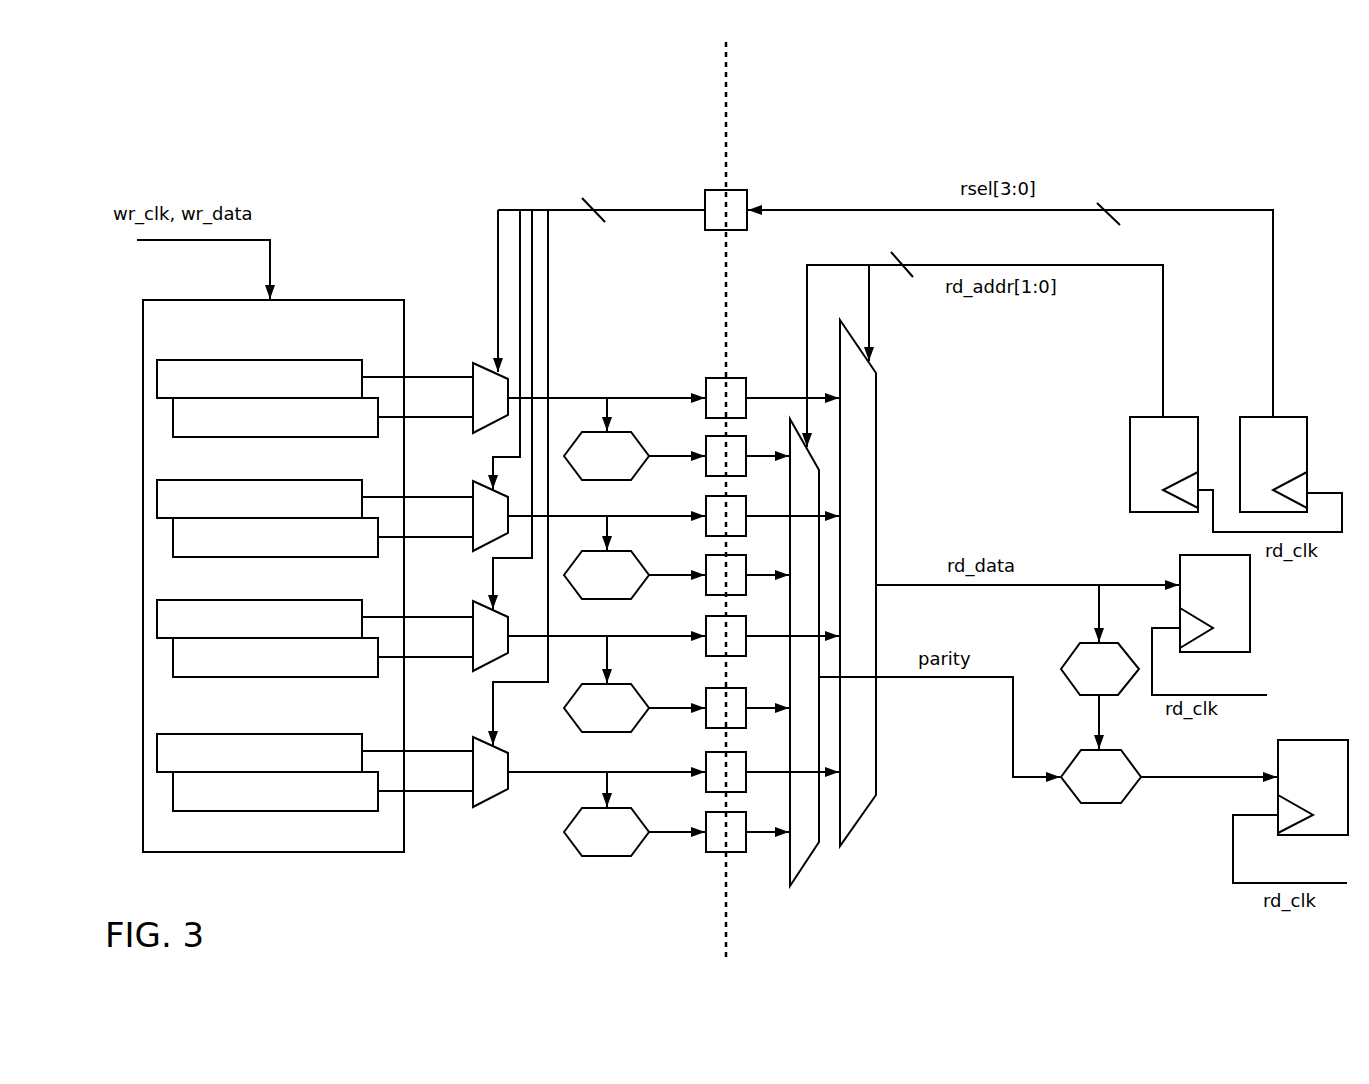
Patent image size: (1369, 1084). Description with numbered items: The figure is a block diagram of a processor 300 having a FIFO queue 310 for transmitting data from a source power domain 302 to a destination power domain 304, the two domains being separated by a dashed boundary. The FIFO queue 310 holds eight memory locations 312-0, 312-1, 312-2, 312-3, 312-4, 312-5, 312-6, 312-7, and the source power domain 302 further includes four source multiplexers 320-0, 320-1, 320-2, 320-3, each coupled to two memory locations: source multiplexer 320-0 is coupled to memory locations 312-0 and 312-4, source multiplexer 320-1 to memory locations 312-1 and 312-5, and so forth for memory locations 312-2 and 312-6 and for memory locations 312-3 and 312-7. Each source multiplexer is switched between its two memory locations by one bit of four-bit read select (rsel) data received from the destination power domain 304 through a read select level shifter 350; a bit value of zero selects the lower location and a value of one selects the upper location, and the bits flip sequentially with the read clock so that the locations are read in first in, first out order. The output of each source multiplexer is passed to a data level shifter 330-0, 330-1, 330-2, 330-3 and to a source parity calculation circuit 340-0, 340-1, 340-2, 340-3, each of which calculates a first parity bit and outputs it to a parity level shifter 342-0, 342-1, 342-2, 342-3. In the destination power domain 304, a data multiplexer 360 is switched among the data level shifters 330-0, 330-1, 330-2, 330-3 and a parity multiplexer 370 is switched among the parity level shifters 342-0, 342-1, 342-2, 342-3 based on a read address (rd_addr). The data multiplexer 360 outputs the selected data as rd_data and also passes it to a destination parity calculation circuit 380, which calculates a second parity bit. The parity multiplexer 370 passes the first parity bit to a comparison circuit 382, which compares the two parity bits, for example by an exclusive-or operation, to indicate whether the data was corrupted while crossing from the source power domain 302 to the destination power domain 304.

The processor 300 is at (116, 92).
The source power domain 302 is at (613, 114).
The destination power domain 304 is at (901, 114).
The FIFO queue 310 is at (193, 331).
The memory location 312-0 is at (157, 381).
The memory location 312-1 is at (157, 501).
The memory location 312-2 is at (157, 618).
The memory location 312-3 is at (157, 755).
The memory location 312-4 is at (173, 416).
The memory location 312-5 is at (173, 537).
The memory location 312-6 is at (173, 657).
The memory location 312-7 is at (173, 791).
The source multiplexer 320-0 is at (473, 366).
The source multiplexer 320-1 is at (473, 484).
The source multiplexer 320-2 is at (473, 604).
The source multiplexer 320-3 is at (473, 740).
The data level shifter 330-0 is at (705, 388).
The data level shifter 330-1 is at (705, 506).
The data level shifter 330-2 is at (705, 626).
The data level shifter 330-3 is at (705, 762).
The source parity calculation circuit 340-0 is at (606, 456).
The source parity calculation circuit 340-1 is at (606, 575).
The source parity calculation circuit 340-2 is at (606, 708).
The source parity calculation circuit 340-3 is at (606, 832).
The parity level shifter 342-0 is at (706, 441).
The parity level shifter 342-1 is at (706, 560).
The parity level shifter 342-2 is at (706, 693).
The parity level shifter 342-3 is at (706, 817).
The read select level shifter 350 is at (705, 195).
The data multiplexer 360 is at (878, 400).
The parity multiplexer 370 is at (822, 858).
The destination parity calculation circuit 380 is at (1100, 669).
The comparison circuit 382 is at (1101, 776).